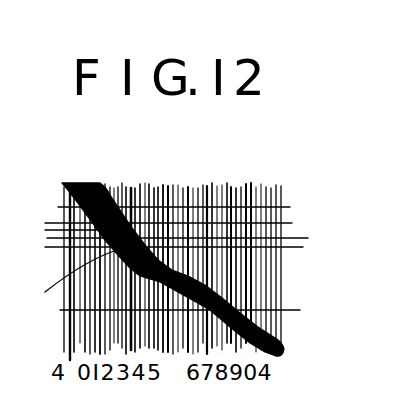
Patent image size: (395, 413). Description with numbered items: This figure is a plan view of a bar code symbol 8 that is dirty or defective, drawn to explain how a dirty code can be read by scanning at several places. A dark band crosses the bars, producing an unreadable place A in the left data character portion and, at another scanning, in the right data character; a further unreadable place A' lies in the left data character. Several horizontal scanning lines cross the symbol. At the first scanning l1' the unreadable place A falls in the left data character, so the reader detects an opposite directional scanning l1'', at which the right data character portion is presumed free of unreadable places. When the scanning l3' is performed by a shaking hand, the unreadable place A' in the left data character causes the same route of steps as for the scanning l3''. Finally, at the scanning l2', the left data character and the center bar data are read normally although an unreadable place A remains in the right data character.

The bar code symbol 8 is at (213, 182).
The unreadable place A is at (156, 285).
The unreadable place A' is at (70, 278).
The first scanning l1' is at (184, 217).
The scanning l3' is at (194, 243).
The scanning l2' is at (199, 309).
The scanning l3'' is at (153, 202).
The opposite directional scanning l1'' is at (155, 235).